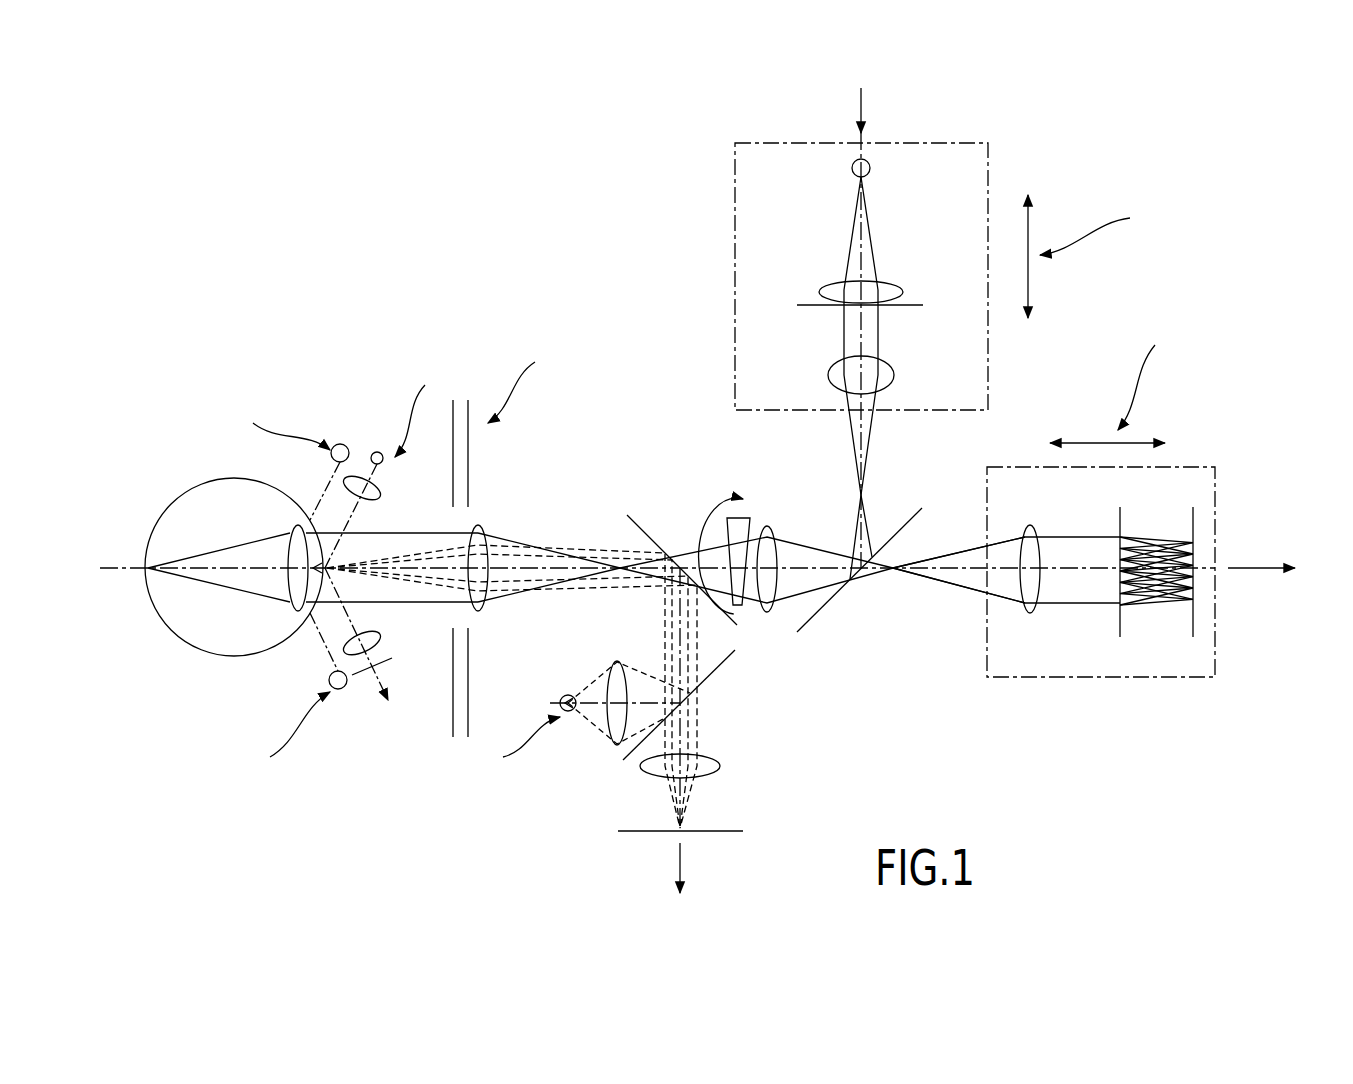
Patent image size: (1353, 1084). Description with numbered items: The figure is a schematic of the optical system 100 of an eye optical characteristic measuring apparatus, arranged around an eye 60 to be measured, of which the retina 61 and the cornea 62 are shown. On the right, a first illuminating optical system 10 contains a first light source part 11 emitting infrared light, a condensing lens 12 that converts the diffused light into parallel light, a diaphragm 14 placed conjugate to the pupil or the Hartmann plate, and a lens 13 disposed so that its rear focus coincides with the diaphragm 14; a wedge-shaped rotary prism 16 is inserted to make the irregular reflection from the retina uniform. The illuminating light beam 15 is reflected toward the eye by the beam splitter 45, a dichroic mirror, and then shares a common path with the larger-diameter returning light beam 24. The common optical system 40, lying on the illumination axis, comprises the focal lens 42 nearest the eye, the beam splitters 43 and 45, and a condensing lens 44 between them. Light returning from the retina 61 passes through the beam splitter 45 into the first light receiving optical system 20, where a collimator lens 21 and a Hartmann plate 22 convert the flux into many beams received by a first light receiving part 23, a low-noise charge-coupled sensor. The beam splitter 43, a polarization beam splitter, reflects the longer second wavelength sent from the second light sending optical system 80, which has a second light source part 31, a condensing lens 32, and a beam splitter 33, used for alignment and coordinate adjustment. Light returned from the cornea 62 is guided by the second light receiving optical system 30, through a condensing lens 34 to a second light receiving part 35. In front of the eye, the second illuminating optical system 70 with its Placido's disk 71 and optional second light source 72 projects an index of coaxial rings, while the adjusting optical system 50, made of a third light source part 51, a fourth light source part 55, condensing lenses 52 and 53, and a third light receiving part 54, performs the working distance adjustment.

The optical system 100 is at (295, 291).
The first illuminating optical system 10 is at (1002, 152).
The first light source part 11 is at (852, 170).
The condensing lens 12 is at (893, 287).
The lens 13 is at (893, 373).
The diaphragm 14 is at (915, 305).
The light beam 15 is at (867, 452).
The wedge-shaped rotary prism 16 is at (752, 523).
The first light receiving optical system 20 is at (1198, 450).
The collimator lens 21 is at (1027, 610).
The Hartmann plate 22 is at (1118, 627).
The first light receiving part 23 is at (1192, 627).
The light beam 24 is at (957, 553).
The second light receiving optical system 30 is at (602, 793).
The second light source part 31 is at (568, 695).
The condensing lens 32 is at (618, 660).
The beam splitter 33 is at (713, 673).
The condensing lens 34 is at (720, 762).
The second light receiving part 35 is at (720, 832).
The common optical system 40 is at (502, 517).
The focal lens 42 is at (481, 611).
The beam splitter 43 is at (643, 527).
The condensing lens 44 is at (765, 613).
The beam splitter 45 is at (822, 610).
The adjusting optical system 50 is at (425, 724).
The third light source part 51 is at (338, 444).
The condensing lens 52 is at (383, 492).
The condensing lens 53 is at (340, 650).
The third light receiving part 54 is at (390, 660).
The fourth light source part 55 is at (377, 452).
The eye to be measured 60 is at (170, 470).
The retina 61 is at (183, 642).
The cornea 62 is at (323, 543).
The second illuminating optical system 70 is at (458, 370).
The Placido's disk 71 is at (453, 402).
The second light source 72 is at (468, 453).
The second light sending optical system 80 is at (583, 735).